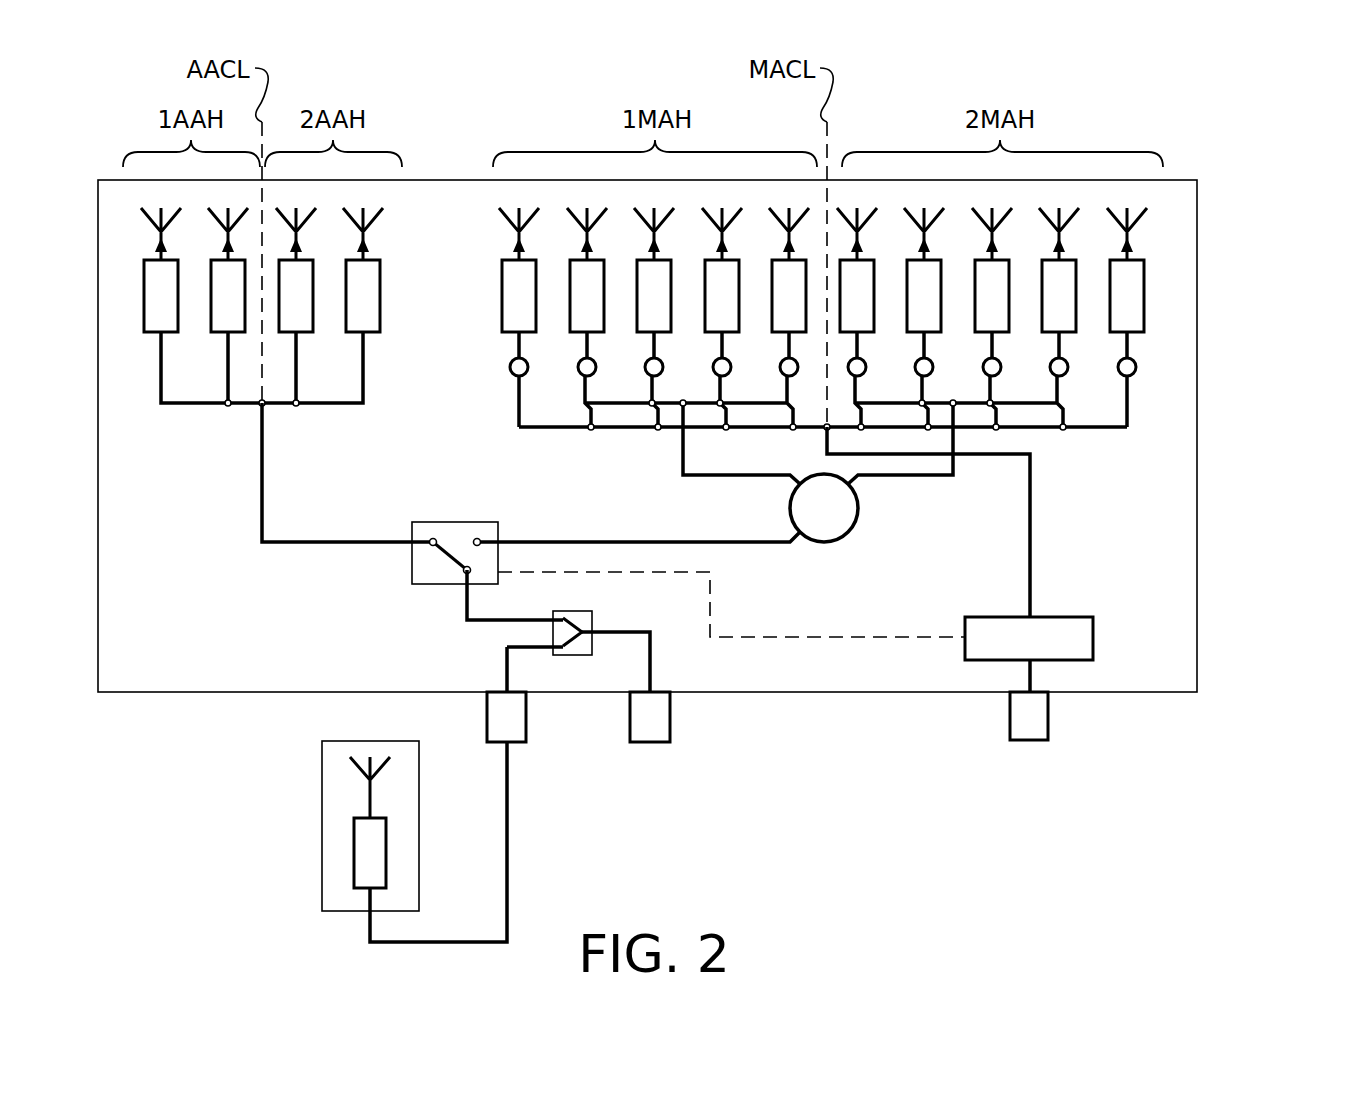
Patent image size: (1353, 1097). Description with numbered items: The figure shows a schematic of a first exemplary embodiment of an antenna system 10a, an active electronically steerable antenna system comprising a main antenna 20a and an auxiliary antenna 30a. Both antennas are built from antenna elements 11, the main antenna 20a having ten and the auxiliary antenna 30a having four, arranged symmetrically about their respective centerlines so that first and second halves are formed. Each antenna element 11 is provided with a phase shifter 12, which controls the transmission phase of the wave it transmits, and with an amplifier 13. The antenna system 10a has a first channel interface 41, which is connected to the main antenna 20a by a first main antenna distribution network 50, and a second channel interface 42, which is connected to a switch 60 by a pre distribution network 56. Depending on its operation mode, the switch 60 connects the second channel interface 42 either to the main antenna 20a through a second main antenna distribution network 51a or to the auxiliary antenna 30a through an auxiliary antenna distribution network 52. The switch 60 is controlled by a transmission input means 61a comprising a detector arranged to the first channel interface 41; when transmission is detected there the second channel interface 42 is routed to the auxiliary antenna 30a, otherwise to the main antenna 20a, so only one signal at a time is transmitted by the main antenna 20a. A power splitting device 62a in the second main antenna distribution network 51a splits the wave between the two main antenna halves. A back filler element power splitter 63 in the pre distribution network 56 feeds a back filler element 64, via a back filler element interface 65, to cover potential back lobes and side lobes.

The antenna system 10a is at (1242, 161).
The antenna element 11 is at (485, 203).
The phase shifter 12 is at (502, 297).
The amplifier 13 is at (516, 245).
The main antenna 20a is at (1163, 414).
The auxiliary antenna 30a is at (208, 428).
The first channel interface 41 is at (1030, 742).
The second channel interface 42 is at (670, 718).
The first main antenna distribution network 50 is at (1030, 522).
The second main antenna distribution network 51a is at (762, 543).
The auxiliary antenna distribution network 52 is at (322, 543).
The pre distribution network 56 is at (650, 660).
The switch 60 is at (455, 510).
The transmission input means 61a is at (1114, 664).
The power splitting device 62a is at (825, 510).
The back filler element power splitter 63 is at (575, 655).
The back filler element 64 is at (322, 815).
The back filler element interface 65 is at (526, 718).